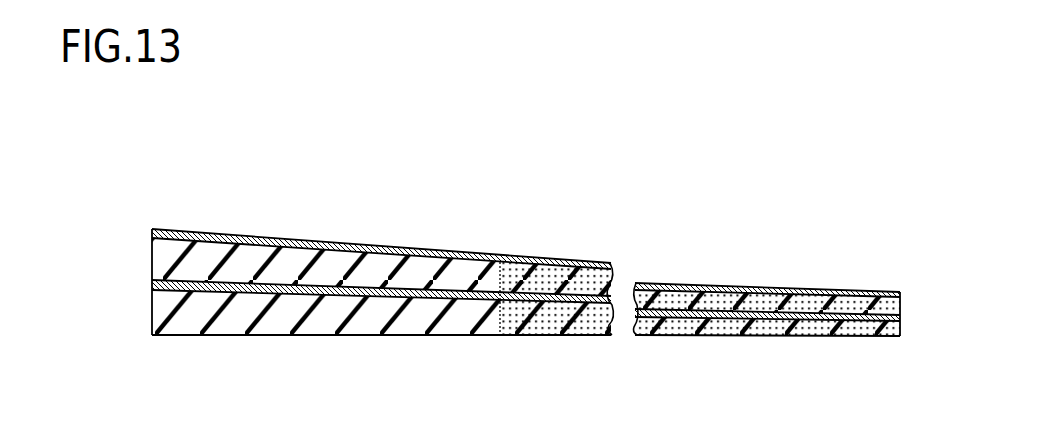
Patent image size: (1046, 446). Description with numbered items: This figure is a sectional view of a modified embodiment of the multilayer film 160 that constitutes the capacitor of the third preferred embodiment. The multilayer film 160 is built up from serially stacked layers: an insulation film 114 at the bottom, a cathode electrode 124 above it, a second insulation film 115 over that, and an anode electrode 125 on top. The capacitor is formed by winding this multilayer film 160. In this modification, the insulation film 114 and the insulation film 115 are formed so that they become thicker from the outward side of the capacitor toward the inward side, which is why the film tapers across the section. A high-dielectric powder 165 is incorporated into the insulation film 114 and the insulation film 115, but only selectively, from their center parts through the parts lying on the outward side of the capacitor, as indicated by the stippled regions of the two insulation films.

The multilayer film 160 is at (493, 132).
The anode electrode 125 is at (168, 233).
The insulation film 115 is at (165, 260).
The cathode electrode 124 is at (167, 287).
The insulation film 114 is at (163, 311).
The high-dielectric powder 165 is at (675, 335).